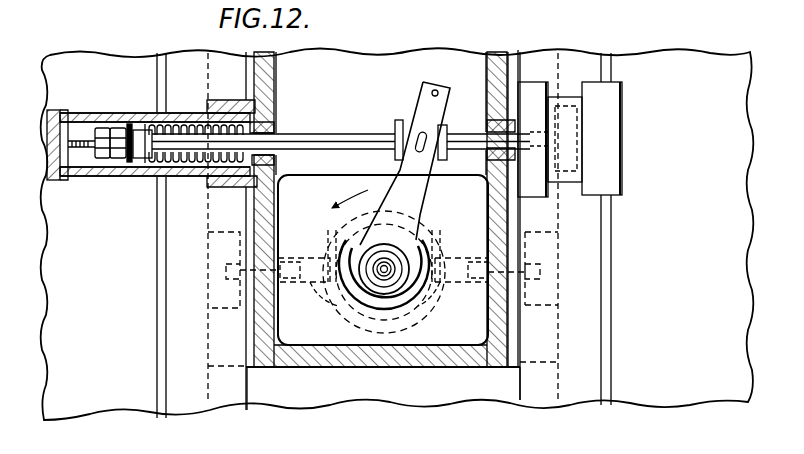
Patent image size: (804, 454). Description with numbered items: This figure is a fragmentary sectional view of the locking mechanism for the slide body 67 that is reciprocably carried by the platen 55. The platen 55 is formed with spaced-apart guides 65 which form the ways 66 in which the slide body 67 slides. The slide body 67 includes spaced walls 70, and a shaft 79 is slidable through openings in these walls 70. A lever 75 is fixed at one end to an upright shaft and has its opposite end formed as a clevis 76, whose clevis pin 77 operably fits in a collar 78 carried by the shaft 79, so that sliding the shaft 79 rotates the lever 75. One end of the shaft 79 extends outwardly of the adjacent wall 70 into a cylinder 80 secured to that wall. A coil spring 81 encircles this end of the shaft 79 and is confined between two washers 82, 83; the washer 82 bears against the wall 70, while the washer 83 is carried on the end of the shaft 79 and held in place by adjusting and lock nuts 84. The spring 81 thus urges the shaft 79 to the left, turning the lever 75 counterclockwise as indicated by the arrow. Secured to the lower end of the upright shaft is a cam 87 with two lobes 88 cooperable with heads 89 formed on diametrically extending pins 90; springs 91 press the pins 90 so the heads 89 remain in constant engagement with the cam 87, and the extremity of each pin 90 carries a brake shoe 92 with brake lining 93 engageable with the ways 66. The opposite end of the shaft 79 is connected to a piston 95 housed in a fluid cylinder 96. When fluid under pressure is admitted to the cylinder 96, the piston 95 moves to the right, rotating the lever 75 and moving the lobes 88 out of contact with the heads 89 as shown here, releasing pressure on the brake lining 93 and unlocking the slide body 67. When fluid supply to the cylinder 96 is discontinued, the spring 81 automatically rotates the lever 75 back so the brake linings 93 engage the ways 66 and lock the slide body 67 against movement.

The platen 55 is at (711, 406).
The guides 65 is at (590, 368).
The ways 66 is at (218, 406).
The slide body 67 is at (370, 372).
The spaced walls 70 is at (268, 200).
The lever 75 is at (412, 207).
The clevis 76 is at (445, 86).
The clevis pin 77 is at (418, 132).
The collar 78 is at (396, 128).
The shaft 79 is at (303, 138).
The cylinder 80 is at (87, 113).
The coil spring 81 is at (172, 126).
The washer 82 is at (272, 115).
The washer 83 is at (129, 124).
The adjusting and lock nuts 84 is at (118, 160).
The cam 87 is at (346, 308).
The lobes 88 is at (334, 236).
The heads 89 is at (384, 271).
The pins 90 is at (228, 272).
The springs 91 is at (383, 272).
The brake shoe 92 is at (224, 248).
The brake lining 93 is at (222, 312).
The piston 95 is at (575, 120).
The fluid cylinder 96 is at (612, 166).